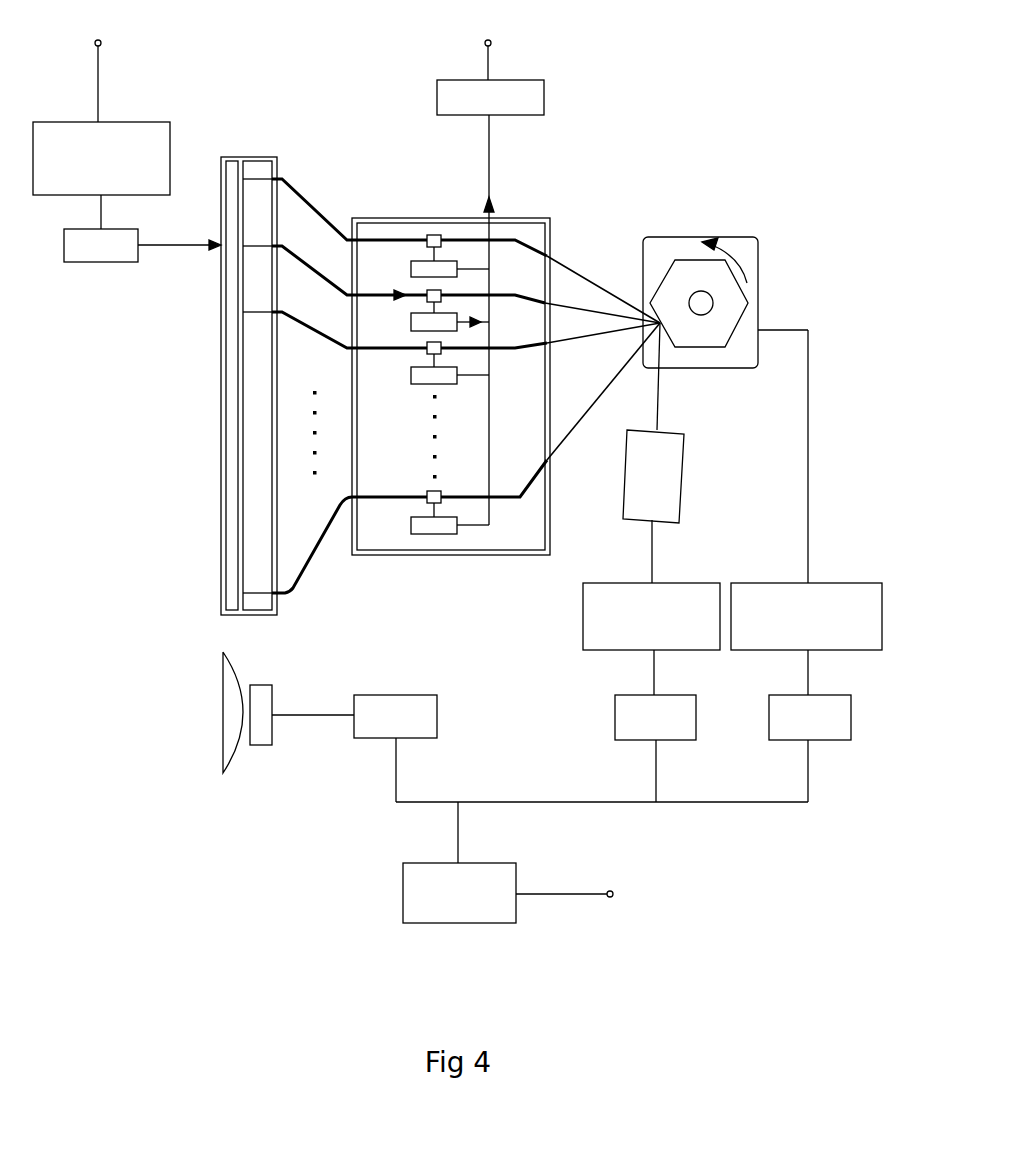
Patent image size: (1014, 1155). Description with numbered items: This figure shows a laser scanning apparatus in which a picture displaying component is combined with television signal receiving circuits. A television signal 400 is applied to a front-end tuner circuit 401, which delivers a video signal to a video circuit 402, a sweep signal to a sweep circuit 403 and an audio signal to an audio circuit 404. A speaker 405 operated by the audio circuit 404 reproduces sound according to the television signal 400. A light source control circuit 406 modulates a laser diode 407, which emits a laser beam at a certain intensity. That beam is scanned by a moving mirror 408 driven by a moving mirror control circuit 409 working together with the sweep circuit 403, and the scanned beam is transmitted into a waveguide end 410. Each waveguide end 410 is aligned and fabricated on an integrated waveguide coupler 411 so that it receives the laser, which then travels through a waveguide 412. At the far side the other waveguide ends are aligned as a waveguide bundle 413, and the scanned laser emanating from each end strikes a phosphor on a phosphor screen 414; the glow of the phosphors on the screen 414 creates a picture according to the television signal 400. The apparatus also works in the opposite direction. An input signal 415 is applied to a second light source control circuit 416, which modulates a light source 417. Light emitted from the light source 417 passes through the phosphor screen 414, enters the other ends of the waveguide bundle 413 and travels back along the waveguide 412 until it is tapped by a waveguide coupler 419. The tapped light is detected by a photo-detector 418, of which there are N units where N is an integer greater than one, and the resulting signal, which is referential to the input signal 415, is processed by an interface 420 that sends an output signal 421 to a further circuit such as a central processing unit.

The television signal 400 is at (587, 894).
The front-end tuner circuit 401 is at (410, 907).
The video circuit 402 is at (688, 702).
The sweep circuit 403 is at (847, 702).
The audio circuit 404 is at (427, 702).
The speaker 405 is at (260, 695).
The light source control circuit 406 is at (677, 583).
The laser diode 407 is at (668, 448).
The moving mirror 408 is at (662, 250).
The moving mirror control circuit 409 is at (842, 583).
The waveguide end 410 is at (557, 255).
The integrated waveguide coupler 411 is at (512, 537).
The waveguide 412 is at (298, 192).
The waveguide bundle 413 is at (248, 172).
The phosphor screen 414 is at (233, 168).
The input signal 415 is at (98, 68).
The light source control circuit 416 is at (110, 128).
The light source 417 is at (113, 242).
The photo-detector 418 is at (420, 523).
The waveguide coupler 419 is at (433, 236).
The interface 420 is at (515, 90).
The output signal 421 is at (488, 47).